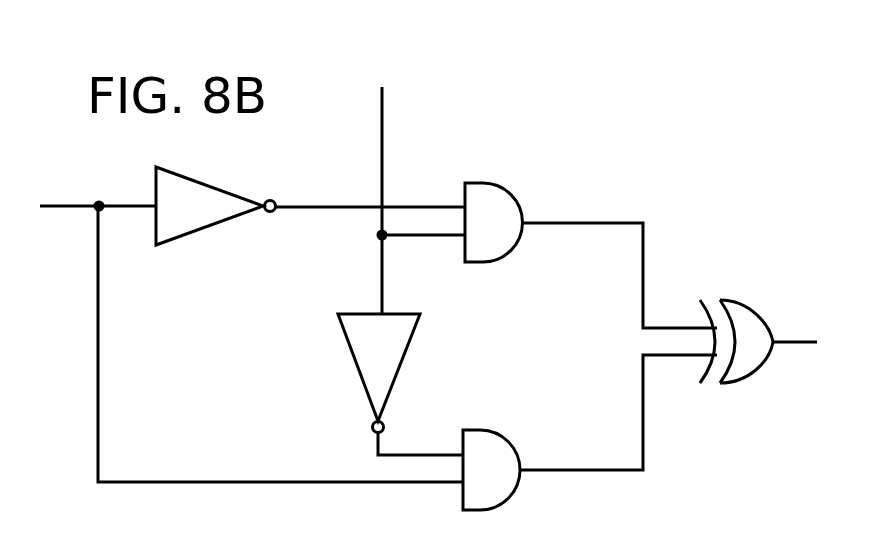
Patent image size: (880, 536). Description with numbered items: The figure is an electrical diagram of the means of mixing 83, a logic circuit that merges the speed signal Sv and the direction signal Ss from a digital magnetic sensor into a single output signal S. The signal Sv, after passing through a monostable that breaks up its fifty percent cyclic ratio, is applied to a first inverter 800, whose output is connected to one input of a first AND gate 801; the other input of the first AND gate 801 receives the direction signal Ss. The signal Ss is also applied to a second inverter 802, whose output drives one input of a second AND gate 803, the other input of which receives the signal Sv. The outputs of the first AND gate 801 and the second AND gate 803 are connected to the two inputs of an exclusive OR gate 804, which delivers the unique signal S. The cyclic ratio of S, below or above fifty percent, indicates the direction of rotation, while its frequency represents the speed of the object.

The means of mixing 83 is at (642, 180).
The first inverter 800 is at (208, 220).
The first AND gate 801 is at (505, 217).
The second inverter 802 is at (400, 340).
The second AND gate 803 is at (488, 450).
The exclusive OR gate 804 is at (750, 313).